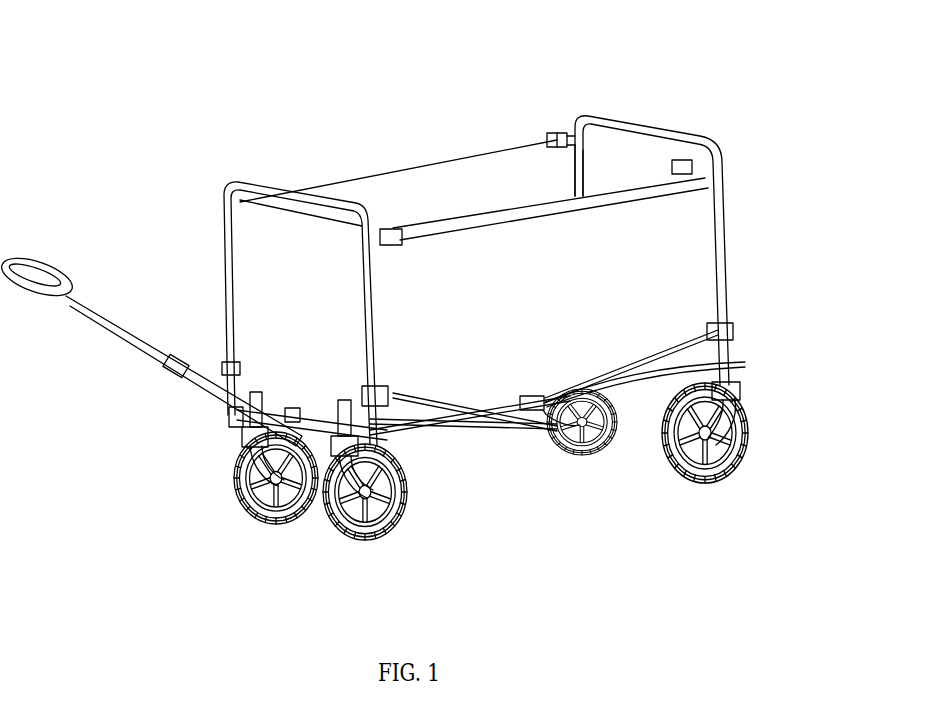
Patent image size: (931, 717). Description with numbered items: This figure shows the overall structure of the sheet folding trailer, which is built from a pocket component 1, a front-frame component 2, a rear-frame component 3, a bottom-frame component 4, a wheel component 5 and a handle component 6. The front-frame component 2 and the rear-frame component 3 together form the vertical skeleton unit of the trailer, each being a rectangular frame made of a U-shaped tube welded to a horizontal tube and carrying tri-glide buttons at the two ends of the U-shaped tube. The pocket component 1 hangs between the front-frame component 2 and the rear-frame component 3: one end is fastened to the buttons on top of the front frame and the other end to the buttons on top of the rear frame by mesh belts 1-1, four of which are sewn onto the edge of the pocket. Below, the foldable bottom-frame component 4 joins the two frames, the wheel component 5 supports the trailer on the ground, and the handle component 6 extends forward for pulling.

The pocket component 1 is at (415, 168).
The mesh belt 1-1 is at (680, 167).
The front-frame component 2 is at (225, 185).
The rear-frame component 3 is at (693, 130).
The bottom-frame component 4 is at (703, 360).
The wheel component 5 is at (350, 547).
The handle component 6 is at (160, 363).